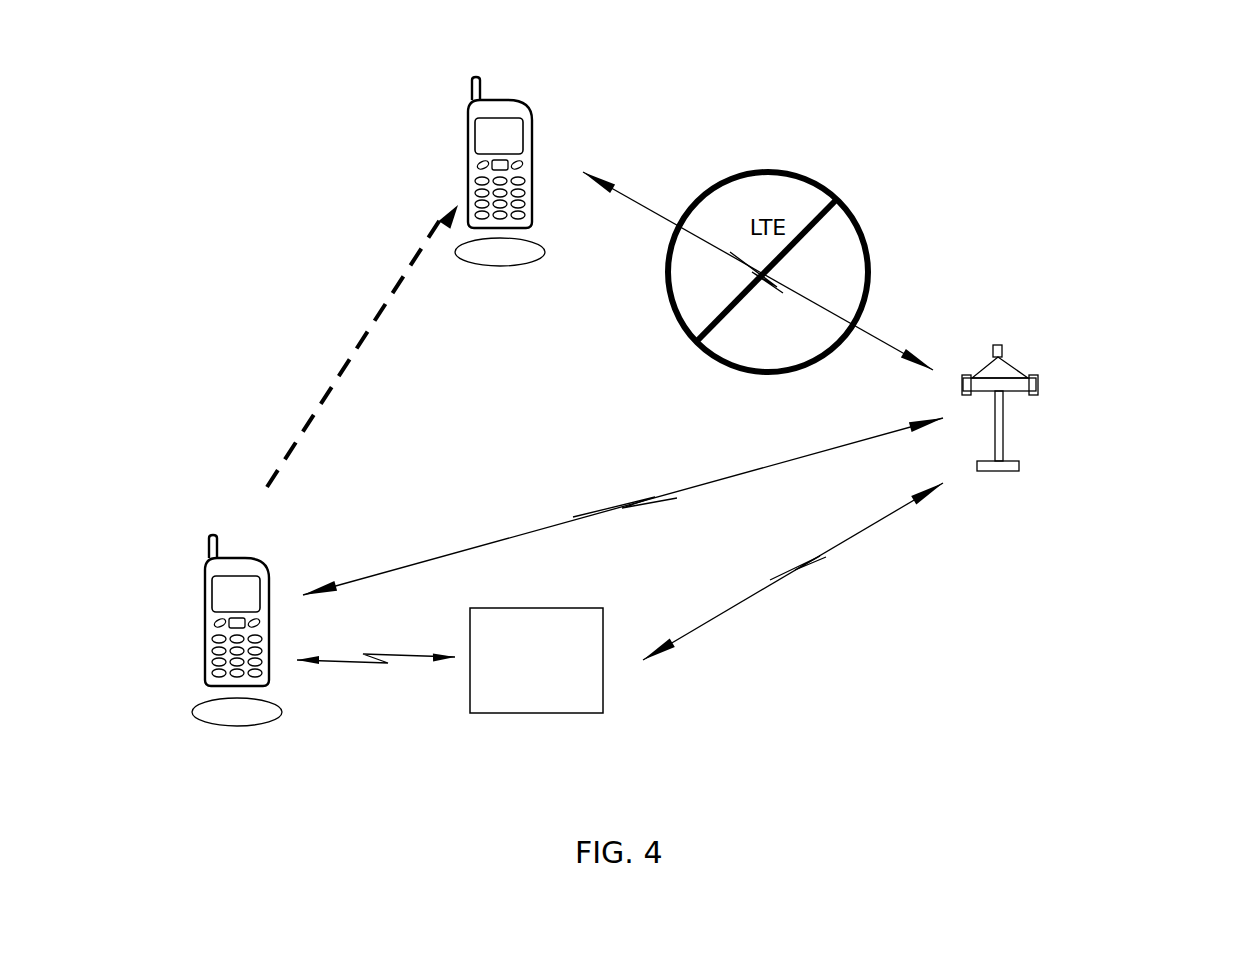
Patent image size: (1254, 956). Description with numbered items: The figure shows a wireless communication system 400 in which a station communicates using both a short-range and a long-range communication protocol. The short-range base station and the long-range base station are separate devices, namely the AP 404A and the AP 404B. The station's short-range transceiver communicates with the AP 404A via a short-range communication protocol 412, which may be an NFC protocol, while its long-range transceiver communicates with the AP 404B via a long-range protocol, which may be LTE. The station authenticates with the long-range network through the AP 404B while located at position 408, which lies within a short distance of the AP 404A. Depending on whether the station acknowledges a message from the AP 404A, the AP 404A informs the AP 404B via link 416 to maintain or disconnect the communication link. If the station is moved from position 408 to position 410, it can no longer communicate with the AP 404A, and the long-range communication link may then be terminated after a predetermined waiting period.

The wireless communication system 400 is at (1153, 110).
The AP 404A is at (536, 660).
The AP 404B is at (998, 345).
The position 408 is at (240, 728).
The position 410 is at (540, 263).
The short-range communication protocol 412 is at (398, 661).
The link 416 is at (893, 513).